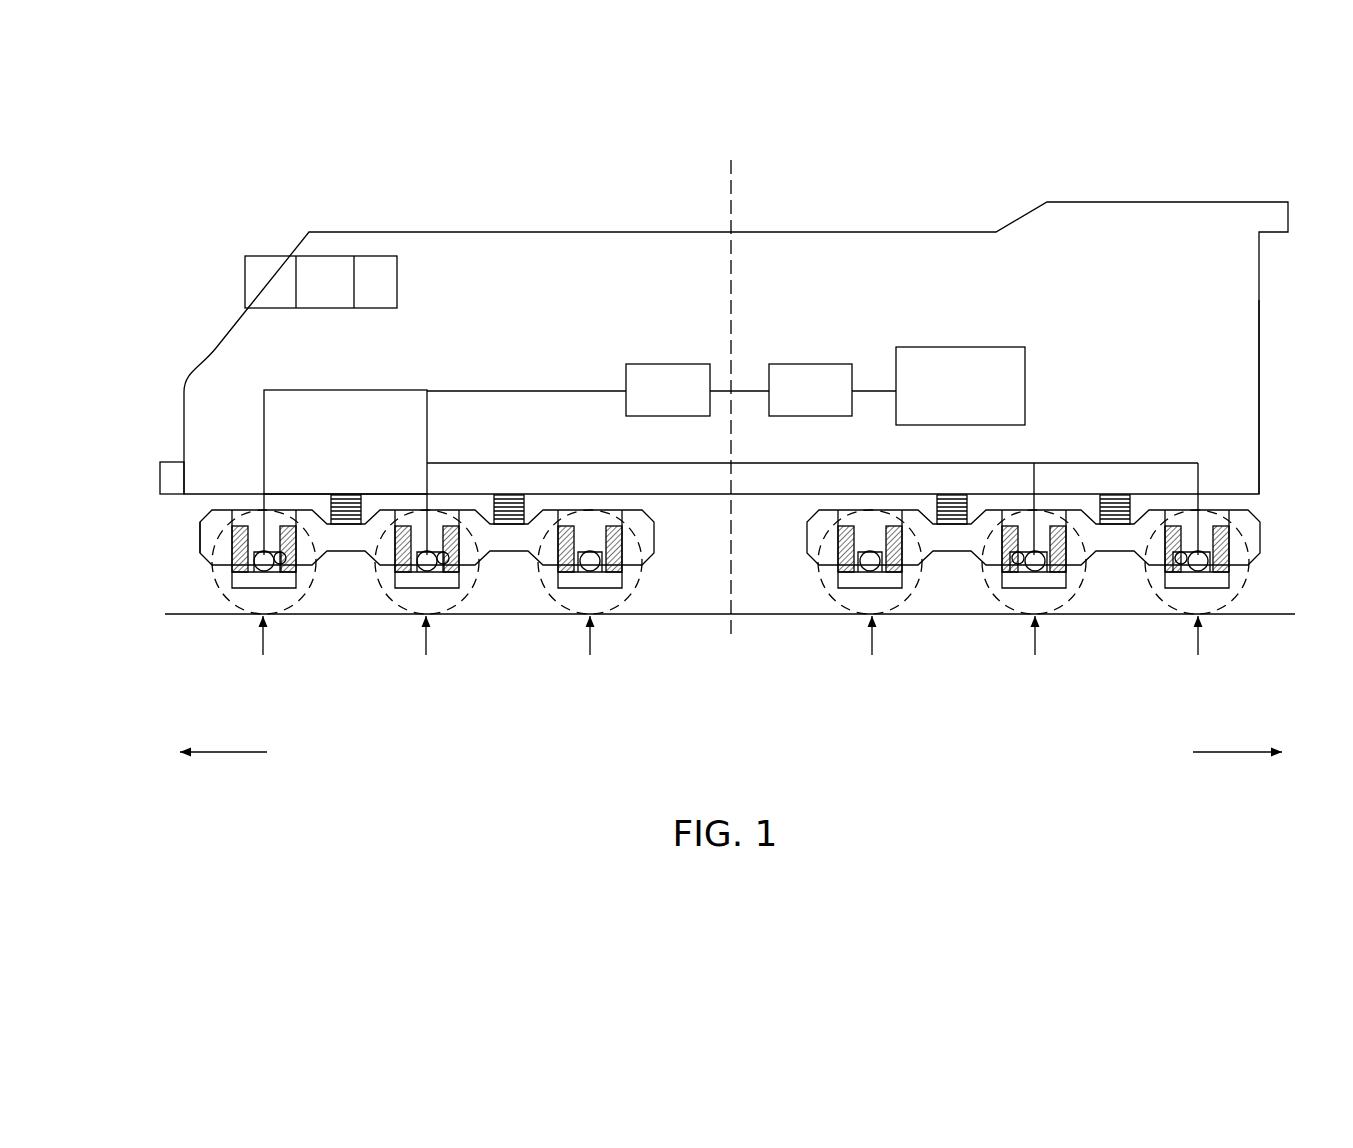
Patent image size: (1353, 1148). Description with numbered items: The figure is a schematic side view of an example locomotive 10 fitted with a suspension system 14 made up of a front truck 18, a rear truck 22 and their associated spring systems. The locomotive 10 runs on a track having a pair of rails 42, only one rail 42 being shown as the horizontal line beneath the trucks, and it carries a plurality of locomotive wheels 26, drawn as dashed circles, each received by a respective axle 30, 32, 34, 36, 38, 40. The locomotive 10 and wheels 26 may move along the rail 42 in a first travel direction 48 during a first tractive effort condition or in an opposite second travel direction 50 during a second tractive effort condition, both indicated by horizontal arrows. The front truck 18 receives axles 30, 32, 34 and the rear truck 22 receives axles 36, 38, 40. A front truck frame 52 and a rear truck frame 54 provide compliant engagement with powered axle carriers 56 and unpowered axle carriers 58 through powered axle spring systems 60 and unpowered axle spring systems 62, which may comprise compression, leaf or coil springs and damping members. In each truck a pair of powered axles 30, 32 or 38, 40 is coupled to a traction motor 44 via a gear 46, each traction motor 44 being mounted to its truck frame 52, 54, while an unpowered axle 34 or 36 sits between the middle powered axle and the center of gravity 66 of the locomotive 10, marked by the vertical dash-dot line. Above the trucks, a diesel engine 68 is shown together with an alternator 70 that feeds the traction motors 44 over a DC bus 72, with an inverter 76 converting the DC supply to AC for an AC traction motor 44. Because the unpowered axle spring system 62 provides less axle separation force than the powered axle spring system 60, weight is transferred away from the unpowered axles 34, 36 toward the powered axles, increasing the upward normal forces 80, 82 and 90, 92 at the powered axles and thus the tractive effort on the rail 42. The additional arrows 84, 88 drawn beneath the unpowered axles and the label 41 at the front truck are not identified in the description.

The locomotive 10 is at (213, 337).
The suspension system 14 is at (1140, 352).
The front truck 18 is at (453, 490).
The rear truck 22 is at (999, 470).
The locomotive wheels 26 is at (318, 586).
The powered axle 30 is at (256, 610).
The middle powered axle 32 is at (416, 610).
The unpowered axle 34 is at (576, 610).
The unpowered axle 36 is at (850, 610).
The middle powered axle 38 is at (1045, 610).
The powered axle 40 is at (1210, 610).
The truck assembly 41 is at (182, 563).
The rail 42 is at (190, 618).
The traction motor 44 is at (266, 540).
The gear 46 is at (295, 588).
The first travel direction 48 is at (253, 752).
The second travel direction 50 is at (1222, 752).
The front truck frame 52 is at (652, 514).
The rear truck frame 54 is at (807, 537).
The powered axle carrier 56 is at (240, 582).
The unpowered axle carrier 58 is at (570, 578).
The powered axle spring system 60 is at (293, 542).
The unpowered axle spring system 62 is at (633, 540).
The center of gravity 66 is at (733, 172).
The diesel engine 68 is at (960, 347).
The alternator 70 is at (812, 364).
The DC bus 72 is at (378, 390).
The inverter 76 is at (655, 364).
The upward normal force 80 is at (262, 650).
The upward normal force 82 is at (425, 650).
The third axle load 84 is at (589, 650).
The fourth axle load 88 is at (873, 650).
The upward normal force 90 is at (1023, 650).
The upward normal force 92 is at (1190, 650).